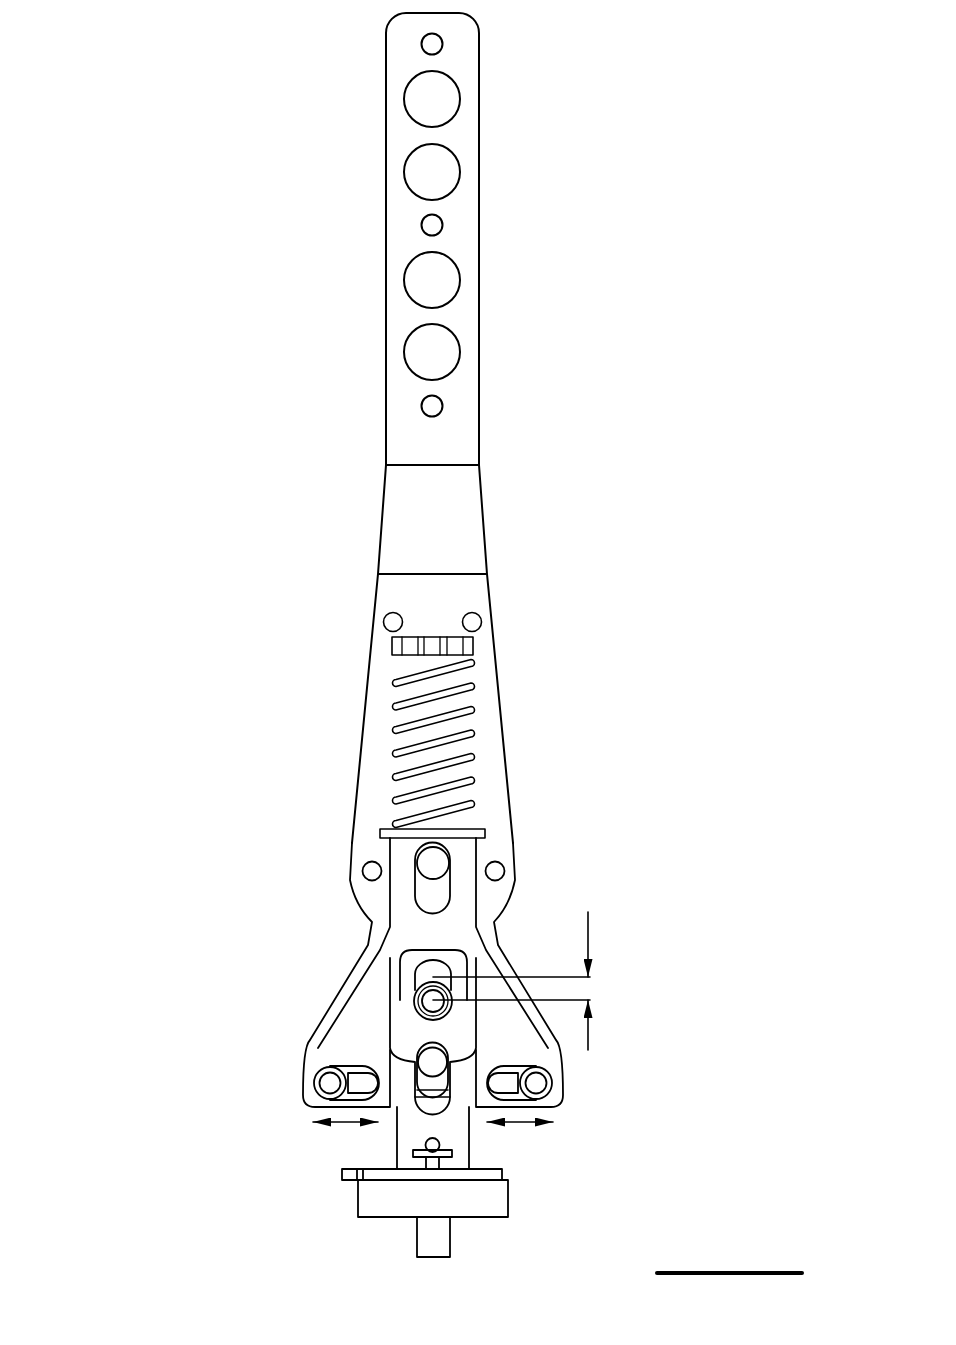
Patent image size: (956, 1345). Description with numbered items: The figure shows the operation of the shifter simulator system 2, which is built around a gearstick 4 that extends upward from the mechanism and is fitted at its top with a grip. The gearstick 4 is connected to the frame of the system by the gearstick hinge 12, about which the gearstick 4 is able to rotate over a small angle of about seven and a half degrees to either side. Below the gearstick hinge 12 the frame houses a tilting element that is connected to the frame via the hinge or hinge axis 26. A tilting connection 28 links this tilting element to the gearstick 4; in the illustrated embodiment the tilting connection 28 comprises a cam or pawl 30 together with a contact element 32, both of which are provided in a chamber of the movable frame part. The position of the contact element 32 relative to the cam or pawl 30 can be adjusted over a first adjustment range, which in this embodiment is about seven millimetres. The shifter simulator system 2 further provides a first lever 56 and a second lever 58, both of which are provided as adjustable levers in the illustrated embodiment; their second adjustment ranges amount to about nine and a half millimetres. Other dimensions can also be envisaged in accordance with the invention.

The shifter simulator system 2 is at (212, 168).
The gearstick 4 is at (397, 207).
The gearstick hinge 12 is at (433, 865).
The hinge axis 26 is at (433, 1062).
The tilting connection 28 is at (437, 957).
The cam or pawl 30 is at (433, 1001).
The contact element 32 is at (422, 990).
The first lever 56 is at (370, 848).
The second lever 58 is at (305, 1127).